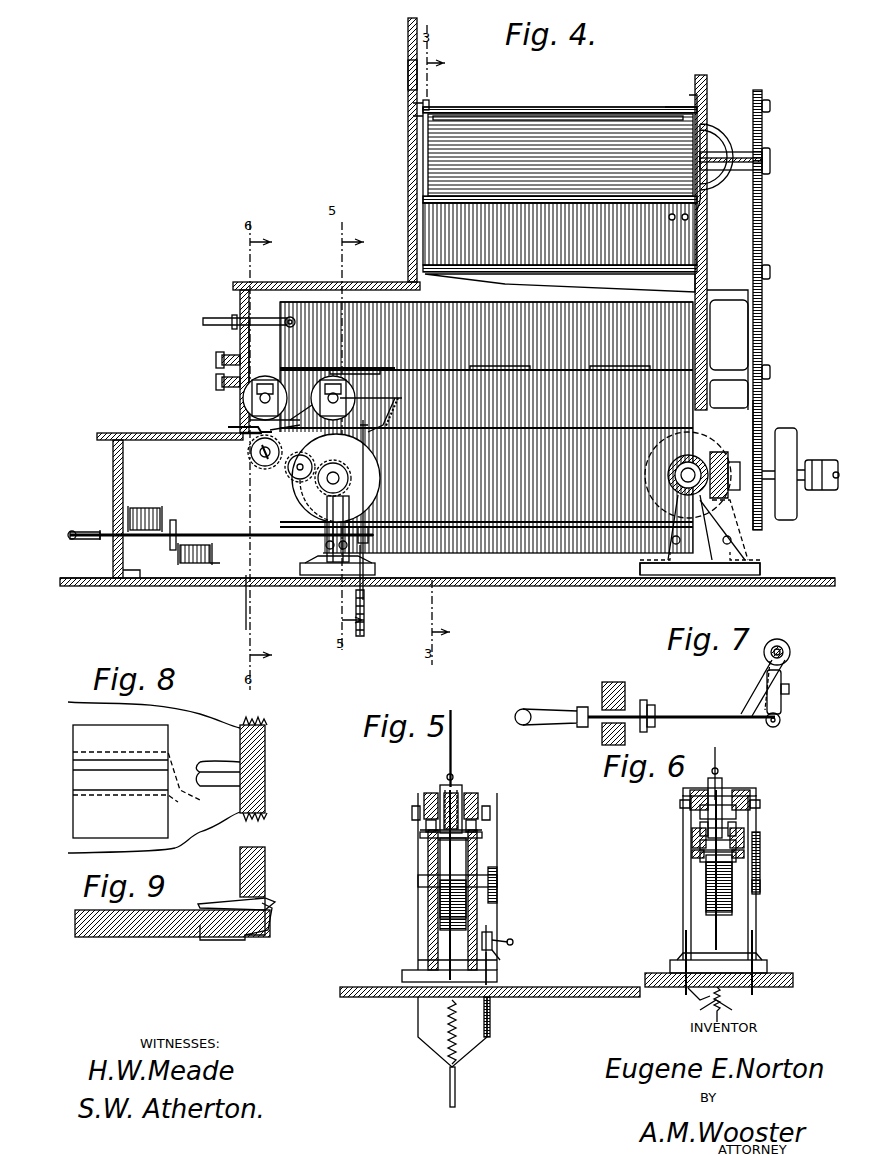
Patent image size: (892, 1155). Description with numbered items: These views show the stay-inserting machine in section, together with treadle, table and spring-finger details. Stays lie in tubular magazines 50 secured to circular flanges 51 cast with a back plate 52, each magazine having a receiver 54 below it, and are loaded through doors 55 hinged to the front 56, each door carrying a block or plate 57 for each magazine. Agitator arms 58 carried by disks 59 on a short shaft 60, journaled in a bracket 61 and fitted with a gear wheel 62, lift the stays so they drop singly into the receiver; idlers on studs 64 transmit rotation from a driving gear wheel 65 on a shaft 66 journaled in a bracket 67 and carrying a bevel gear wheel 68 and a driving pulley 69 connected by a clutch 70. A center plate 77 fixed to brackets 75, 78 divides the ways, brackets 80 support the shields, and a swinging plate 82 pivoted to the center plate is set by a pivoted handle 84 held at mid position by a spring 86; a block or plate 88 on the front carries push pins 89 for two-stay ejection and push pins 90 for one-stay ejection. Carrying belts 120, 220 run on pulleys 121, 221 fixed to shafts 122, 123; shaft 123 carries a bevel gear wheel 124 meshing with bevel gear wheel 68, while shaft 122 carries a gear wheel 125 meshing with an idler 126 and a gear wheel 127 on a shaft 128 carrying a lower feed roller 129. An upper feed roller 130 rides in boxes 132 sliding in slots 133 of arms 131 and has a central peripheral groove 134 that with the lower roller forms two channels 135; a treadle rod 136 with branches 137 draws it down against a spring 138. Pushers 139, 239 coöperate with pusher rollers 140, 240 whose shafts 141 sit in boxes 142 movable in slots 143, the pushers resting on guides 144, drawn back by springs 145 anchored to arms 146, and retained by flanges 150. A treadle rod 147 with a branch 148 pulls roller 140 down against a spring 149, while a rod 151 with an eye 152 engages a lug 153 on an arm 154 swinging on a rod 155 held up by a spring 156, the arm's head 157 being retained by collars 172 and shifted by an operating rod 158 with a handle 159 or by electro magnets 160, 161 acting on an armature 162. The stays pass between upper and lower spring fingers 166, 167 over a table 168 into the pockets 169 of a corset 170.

In FIG. 4, the tubular magazines 50 is at (606, 107).
In FIG. 4, the circular flanges 51 is at (680, 106).
In FIG. 4, the back plate 52 is at (709, 330).
In FIG. 4, the receiver 54 is at (548, 226).
In FIG. 4, the doors 55 is at (406, 160).
In FIG. 8, the doors 55 is at (244, 722).
In FIG. 9, the doors 55 is at (240, 856).
In FIG. 4, the front 56 is at (112, 484).
In FIG. 7, the front 56 is at (600, 690).
In FIG. 4, the block or plate 57 is at (425, 108).
In FIG. 4, the arms 58 is at (505, 200).
In FIG. 4, the disks 59 is at (716, 113).
In FIG. 4, the short shaft 60 is at (736, 150).
In FIG. 4, the bracket 61 is at (722, 200).
In FIG. 4, the gear wheel 62 is at (766, 126).
In FIG. 4, the studs 64 is at (770, 375).
In FIG. 4, the driving gear wheel 65 is at (764, 428).
In FIG. 4, the shaft 66 is at (808, 490).
In FIG. 4, the bracket 67 is at (765, 543).
In FIG. 4, the bevel gear wheel 68 is at (722, 458).
In FIG. 4, the driving pulley 69 is at (797, 437).
In FIG. 4, the clutch 70 is at (826, 462).
In FIG. 4, the brackets 75 is at (322, 558).
In FIG. 5, the brackets 75 is at (480, 920).
In FIG. 6, the brackets 75 is at (740, 918).
In FIG. 4, the center plate 77 is at (417, 478).
In FIG. 5, the center plate 77 is at (452, 850).
In FIG. 6, the center plate 77 is at (722, 932).
In FIG. 4, the brackets 78 is at (690, 570).
In FIG. 4, the brackets 80 is at (606, 283).
In FIG. 4, the swinging plate 82 is at (300, 302).
In FIG. 5, the swinging plate 82 is at (460, 716).
In FIG. 6, the swinging plate 82 is at (712, 768).
In FIG. 4, the pivoted handle 84 is at (228, 321).
In FIG. 4, the spring 86 is at (250, 326).
In FIG. 4, the block or plate 88 is at (225, 358).
In FIG. 4, the push pins 89 is at (214, 360).
In FIG. 4, the push pins 90 is at (218, 386).
In FIG. 5, the carrying belt 120 is at (432, 860).
In FIG. 6, the carrying belt 120 is at (706, 879).
In FIG. 4, the pulleys 121 is at (312, 505).
In FIG. 5, the pulleys 121 is at (466, 912).
In FIG. 6, the pulleys 121 is at (736, 916).
In FIG. 4, the shaft 122 is at (300, 500).
In FIG. 5, the shaft 122 is at (420, 886).
In FIG. 6, the shaft 122 is at (760, 880).
In FIG. 4, the shaft 123 is at (681, 477).
In FIG. 4, the bevel gear wheel 124 is at (680, 458).
In FIG. 4, the gear wheel 125 is at (334, 462).
In FIG. 5, the gear wheel 125 is at (498, 873).
In FIG. 6, the gear wheel 125 is at (760, 884).
In FIG. 4, the idler 126 is at (290, 475).
In FIG. 4, the gear wheel 127 is at (262, 452).
In FIG. 6, the gear wheel 127 is at (760, 842).
In FIG. 4, the shaft 128 is at (260, 458).
In FIG. 6, the shaft 128 is at (690, 854).
In FIG. 4, the lower feed roller 129 is at (248, 448).
In FIG. 6, the lower feed roller 129 is at (732, 842).
In FIG. 4, the upper feed roller 130 is at (268, 376).
In FIG. 6, the upper feed roller 130 is at (725, 790).
In FIG. 4, the arms 131 is at (240, 418).
In FIG. 6, the arms 131 is at (744, 836).
In FIG. 4, the boxes 132 is at (262, 391).
In FIG. 6, the boxes 132 is at (744, 790).
In FIG. 4, the slots 133 is at (248, 421).
In FIG. 6, the slots 133 is at (736, 826).
In FIG. 6, the central peripheral groove 134 is at (720, 785).
In FIG. 6, the channels 135 is at (730, 830).
In FIG. 6, the treadle rod 136 is at (722, 1014).
In FIG. 4, the branches 137 is at (250, 598).
In FIG. 6, the branches 137 is at (760, 1006).
In FIG. 6, the spring 138 is at (700, 1010).
In FIG. 5, the pusher 139 is at (420, 836).
In FIG. 5, the pusher roller 140 is at (448, 776).
In FIG. 4, the shafts 141 is at (337, 359).
In FIG. 5, the shafts 141 is at (492, 808).
In FIG. 4, the boxes 142 is at (340, 376).
In FIG. 5, the boxes 142 is at (478, 798).
In FIG. 4, the slots 143 is at (307, 402).
In FIG. 5, the slots 143 is at (478, 826).
In FIG. 4, the guides 144 is at (290, 414).
In FIG. 5, the guides 144 is at (482, 832).
In FIG. 4, the springs 145 is at (402, 404).
In FIG. 4, the arms 146 is at (372, 380).
In FIG. 5, the treadle rod 147 is at (456, 1098).
In FIG. 5, the branch 148 is at (418, 1020).
In FIG. 5, the spring 149 is at (448, 1030).
In FIG. 5, the flanges 150 is at (456, 790).
In FIG. 5, the rod 151 is at (490, 1022).
In FIG. 7, the eye 152 is at (780, 720).
In FIG. 5, the eye 152 is at (500, 950).
In FIG. 4, the lug 153 is at (370, 537).
In FIG. 7, the lug 153 is at (789, 689).
In FIG. 7, the arm 154 is at (785, 672).
In FIG. 5, the arm 154 is at (510, 940).
In FIG. 4, the rod 155 is at (366, 567).
In FIG. 7, the rod 155 is at (790, 646).
In FIG. 5, the rod 155 is at (488, 922).
In FIG. 4, the spring 156 is at (365, 608).
In FIG. 5, the spring 156 is at (484, 1004).
In FIG. 7, the head 157 is at (777, 640).
In FIG. 5, the head 157 is at (500, 932).
In FIG. 4, the operating rod 158 is at (232, 534).
In FIG. 7, the operating rod 158 is at (700, 713).
In FIG. 4, the handle 159 is at (86, 532).
In FIG. 7, the handle 159 is at (526, 710).
In FIG. 4, the electro magnet 160 is at (140, 507).
In FIG. 4, the electro magnet 161 is at (196, 564).
In FIG. 4, the armature 162 is at (178, 524).
In FIG. 7, the armature 162 is at (654, 704).
In FIG. 4, the upper spring fingers 166 is at (228, 426).
In FIG. 8, the upper spring fingers 166 is at (220, 760).
In FIG. 9, the upper spring fingers 166 is at (216, 900).
In FIG. 4, the lower spring fingers 167 is at (238, 433).
In FIG. 9, the lower spring fingers 167 is at (220, 908).
In FIG. 4, the table 168 is at (120, 433).
In FIG. 8, the table 168 is at (185, 716).
In FIG. 9, the table 168 is at (130, 940).
In FIG. 8, the pockets 169 is at (182, 798).
In FIG. 8, the corset 170 is at (158, 813).
In FIG. 7, the collars 172 is at (785, 630).
In FIG. 5, the collars 172 is at (504, 954).
In FIG. 4, the carrying belt 220 is at (490, 428).
In FIG. 5, the carrying belt 220 is at (462, 862).
In FIG. 6, the carrying belt 220 is at (722, 880).
In FIG. 4, the pulleys 221 is at (675, 535).
In FIG. 4, the pusher 239 is at (390, 412).
In FIG. 5, the pusher 239 is at (470, 840).
In FIG. 4, the pusher roller 240 is at (330, 380).
In FIG. 5, the pusher roller 240 is at (458, 792).